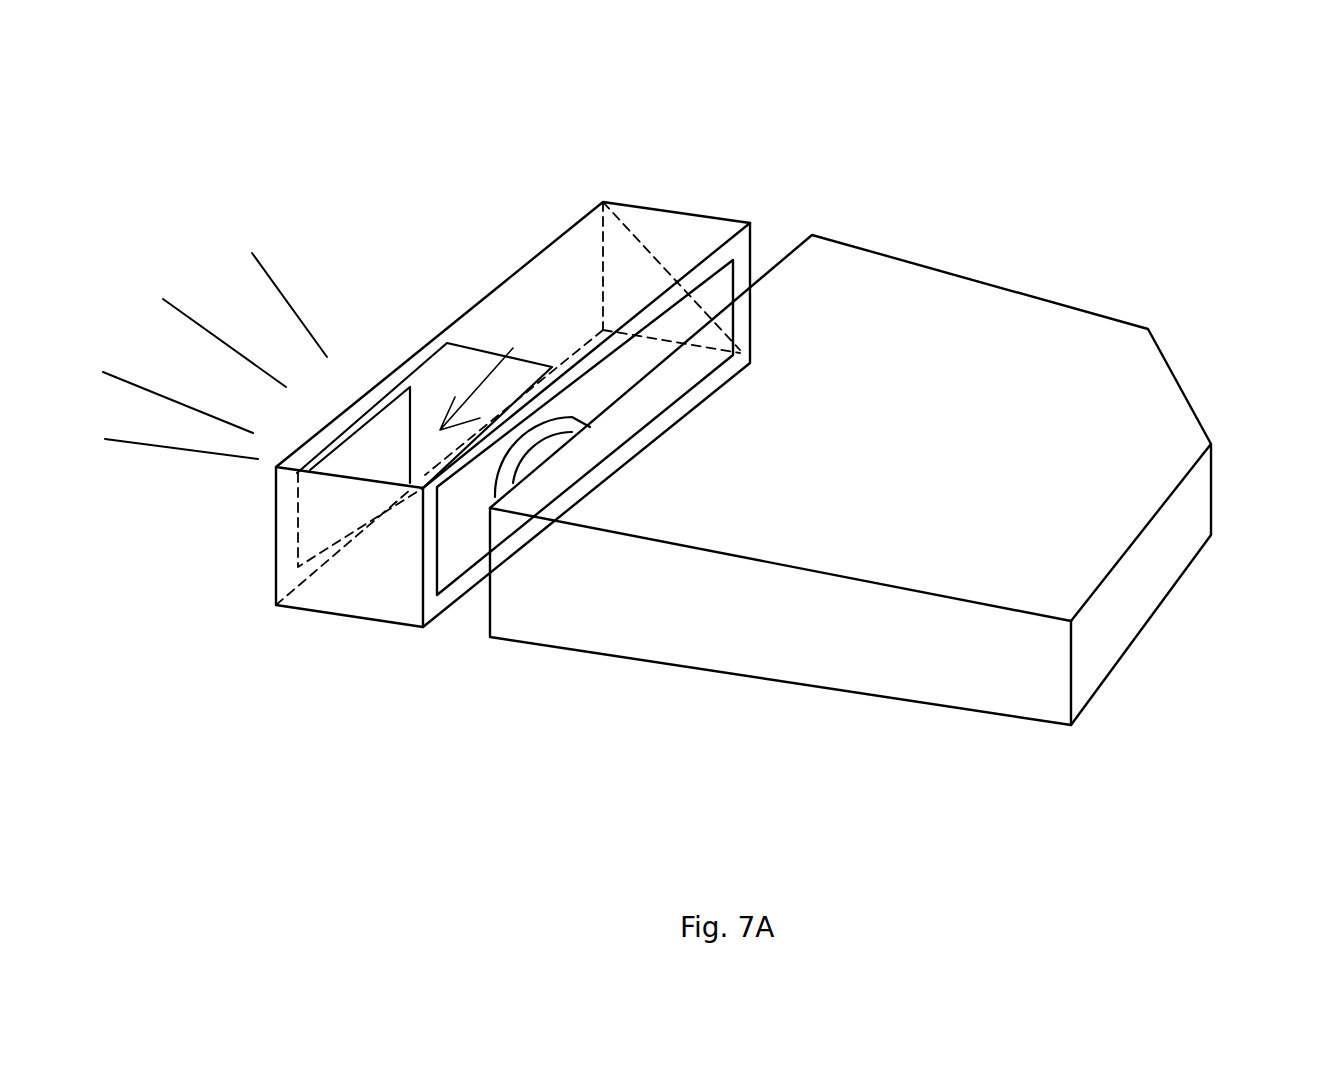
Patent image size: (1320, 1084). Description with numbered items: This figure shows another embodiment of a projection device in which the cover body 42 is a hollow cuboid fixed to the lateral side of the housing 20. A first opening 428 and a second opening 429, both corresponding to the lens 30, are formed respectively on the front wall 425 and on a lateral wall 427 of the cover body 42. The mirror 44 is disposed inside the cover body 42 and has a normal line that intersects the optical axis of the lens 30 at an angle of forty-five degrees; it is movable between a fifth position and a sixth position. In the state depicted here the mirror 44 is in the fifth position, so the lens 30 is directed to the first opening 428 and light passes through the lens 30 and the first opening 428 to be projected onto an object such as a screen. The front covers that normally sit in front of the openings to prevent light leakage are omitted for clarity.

The housing 20 is at (1094, 382).
The lens 30 is at (532, 463).
The cover body 42 is at (673, 210).
The mirror 44 is at (628, 290).
The front wall 425 is at (560, 263).
The lateral wall 427 is at (473, 320).
The first opening 428 is at (297, 525).
The second opening 429 is at (415, 372).